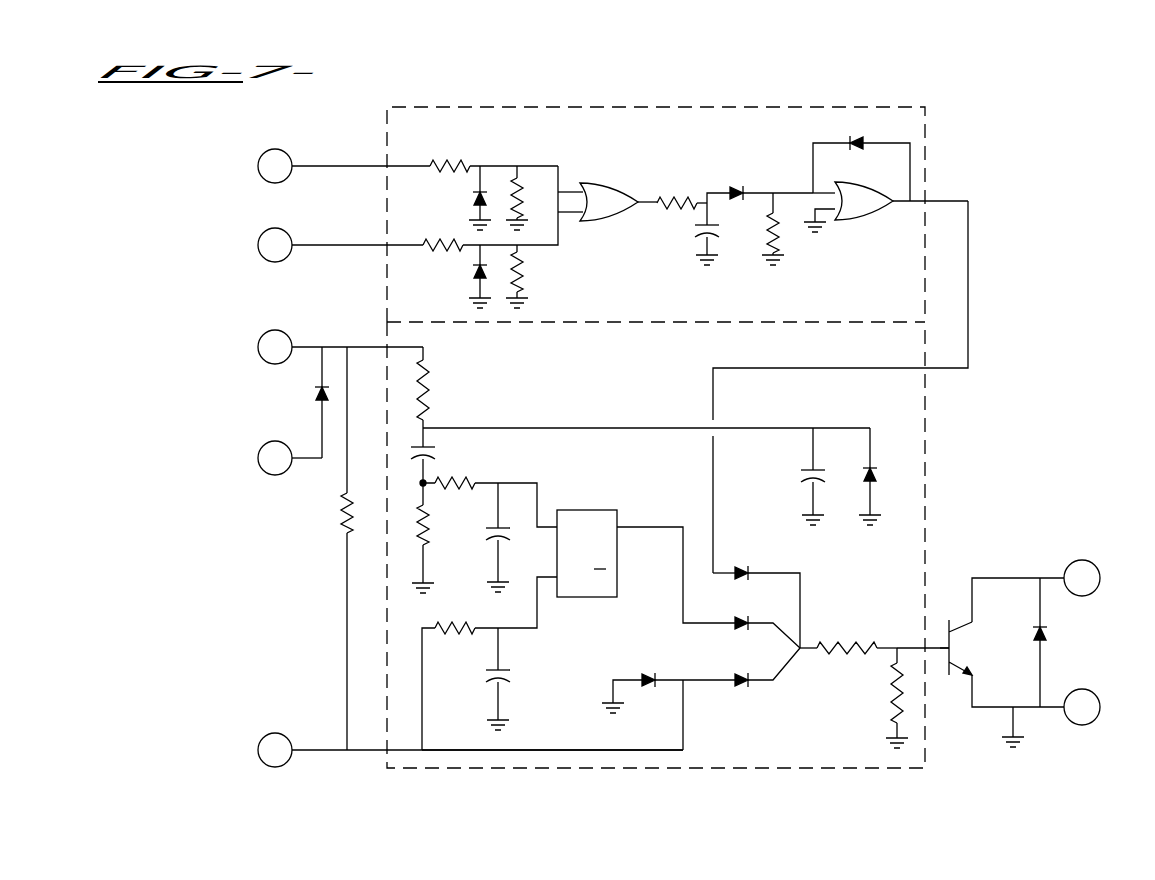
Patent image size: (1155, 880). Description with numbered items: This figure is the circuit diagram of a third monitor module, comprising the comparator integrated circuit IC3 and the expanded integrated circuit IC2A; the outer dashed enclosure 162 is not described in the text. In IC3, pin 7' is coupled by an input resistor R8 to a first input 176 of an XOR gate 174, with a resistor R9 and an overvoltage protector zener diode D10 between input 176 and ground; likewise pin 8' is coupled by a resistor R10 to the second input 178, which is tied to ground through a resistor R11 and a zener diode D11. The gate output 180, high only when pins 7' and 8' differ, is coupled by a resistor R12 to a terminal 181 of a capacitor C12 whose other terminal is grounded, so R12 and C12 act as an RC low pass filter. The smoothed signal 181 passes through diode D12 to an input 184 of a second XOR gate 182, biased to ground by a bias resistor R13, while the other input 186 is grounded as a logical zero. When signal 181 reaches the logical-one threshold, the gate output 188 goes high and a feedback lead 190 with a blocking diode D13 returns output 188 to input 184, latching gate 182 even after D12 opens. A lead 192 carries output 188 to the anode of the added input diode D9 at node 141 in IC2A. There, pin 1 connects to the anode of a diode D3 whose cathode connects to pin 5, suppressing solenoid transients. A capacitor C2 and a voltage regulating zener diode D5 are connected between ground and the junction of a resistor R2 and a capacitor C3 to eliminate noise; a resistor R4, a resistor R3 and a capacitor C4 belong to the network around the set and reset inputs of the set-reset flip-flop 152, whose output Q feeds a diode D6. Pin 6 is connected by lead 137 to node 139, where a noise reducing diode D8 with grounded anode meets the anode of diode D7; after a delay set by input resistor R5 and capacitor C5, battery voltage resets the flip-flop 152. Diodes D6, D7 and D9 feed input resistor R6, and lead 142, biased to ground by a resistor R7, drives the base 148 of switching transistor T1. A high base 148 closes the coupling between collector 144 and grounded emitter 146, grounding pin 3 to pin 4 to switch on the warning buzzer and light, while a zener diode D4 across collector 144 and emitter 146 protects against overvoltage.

The input/trigger circuit 162 is at (505, 80).
The integrated circuit IC3 is at (925, 107).
The expanded integrated circuit IC2A is at (925, 395).
The pin 7' is at (317, 165).
The pin 8' is at (314, 245).
The input resistor R8 is at (463, 165).
The resistor R10 is at (445, 244).
The zener diode D10 is at (475, 198).
The resistor R9 is at (519, 195).
The zener diode D11 is at (472, 272).
The resistor R11 is at (520, 285).
The XOR gate 174 is at (600, 185).
The first input 176 is at (582, 190).
The second input 178 is at (582, 218).
The gate output 180 is at (640, 202).
The resistor R12 is at (660, 200).
The terminal 181 is at (707, 195).
The capacitor C12 is at (695, 232).
The diode D12 is at (735, 190).
The bias resistor R13 is at (770, 225).
The input 184 is at (810, 190).
The feedback lead 190 is at (910, 165).
The blocking diode D13 is at (848, 140).
The second XOR gate 182 is at (880, 190).
The other input 186 is at (835, 210).
The gate output 188 is at (890, 205).
The lead 192 is at (968, 232).
The pin 5 is at (258, 347).
The diode D3 is at (315, 395).
The pin 1 is at (258, 458).
The resistor R2 is at (430, 390).
The capacitor C3 is at (438, 455).
The resistor R4 is at (445, 488).
The resistor R3 is at (425, 545).
The capacitor C4 is at (500, 538).
The set-reset flip-flop 152 is at (600, 510).
The input resistor R5 is at (440, 630).
The capacitor C5 is at (505, 678).
The pin 6 is at (260, 745).
The lead 137 is at (488, 752).
The node 139 is at (705, 635).
The noise reducing diode D8 is at (648, 672).
The diode D7 is at (745, 685).
The diode D6 is at (752, 600).
The input diode D9 is at (752, 548).
The node 141 is at (803, 651).
The input resistor R6 is at (830, 645).
The resistor R7 is at (895, 715).
The lead 142 is at (910, 645).
The switching transistor T1 is at (964, 647).
The base 148 is at (948, 640).
The collector 144 is at (975, 602).
The emitter 146 is at (975, 695).
The zener diode D4 is at (1043, 633).
The pin 3 is at (1100, 578).
The pin 4 is at (1098, 695).
The capacitor C2 is at (800, 478).
The voltage regulating zener diode D5 is at (872, 475).